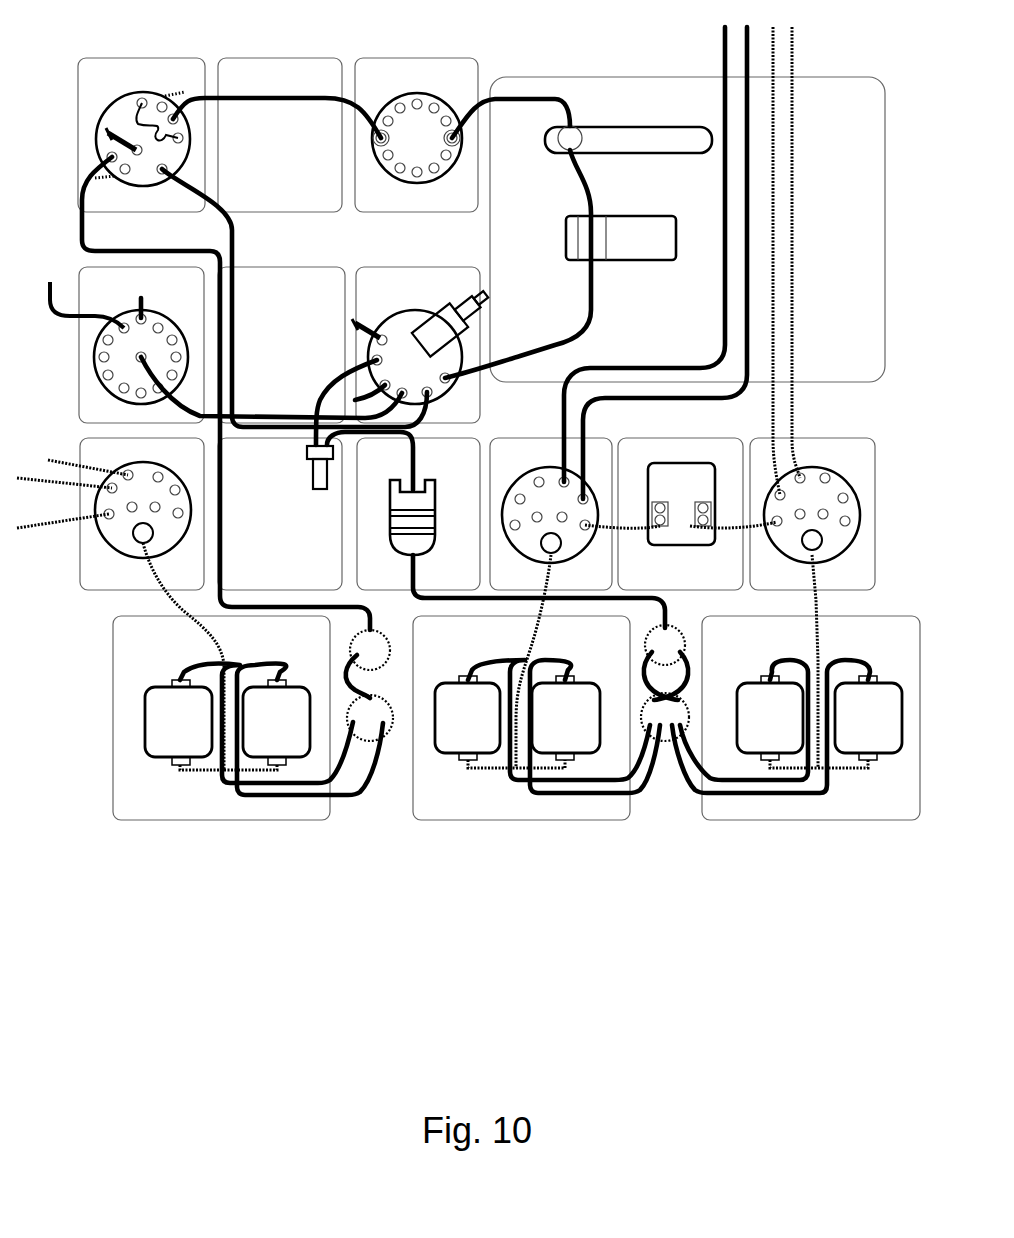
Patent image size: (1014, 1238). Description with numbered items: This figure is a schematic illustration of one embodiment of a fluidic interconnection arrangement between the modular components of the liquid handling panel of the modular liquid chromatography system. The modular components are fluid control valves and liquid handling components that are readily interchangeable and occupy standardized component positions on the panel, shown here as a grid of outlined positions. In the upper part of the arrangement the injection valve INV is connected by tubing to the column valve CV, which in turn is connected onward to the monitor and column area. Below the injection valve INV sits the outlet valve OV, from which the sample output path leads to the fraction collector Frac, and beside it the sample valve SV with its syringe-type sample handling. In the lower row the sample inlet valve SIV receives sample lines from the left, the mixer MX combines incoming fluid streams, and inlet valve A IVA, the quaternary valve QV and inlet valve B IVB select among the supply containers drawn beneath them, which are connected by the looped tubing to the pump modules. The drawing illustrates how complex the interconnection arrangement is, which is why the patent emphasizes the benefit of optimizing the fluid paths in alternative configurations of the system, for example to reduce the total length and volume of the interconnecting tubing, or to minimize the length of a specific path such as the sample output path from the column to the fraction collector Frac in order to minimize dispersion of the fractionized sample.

The injection valve INV is at (137, 123).
The column valve CV is at (412, 121).
The outlet valve OV is at (137, 337).
The sample valve SV is at (423, 336).
The sample inlet valve SIV is at (104, 499).
The mixer MX is at (399, 497).
The inlet valve A IVA is at (547, 501).
The quaternary valve QV is at (670, 492).
The inlet valve B IVB is at (817, 501).
The fraction collector outlet Frac is at (78, 298).